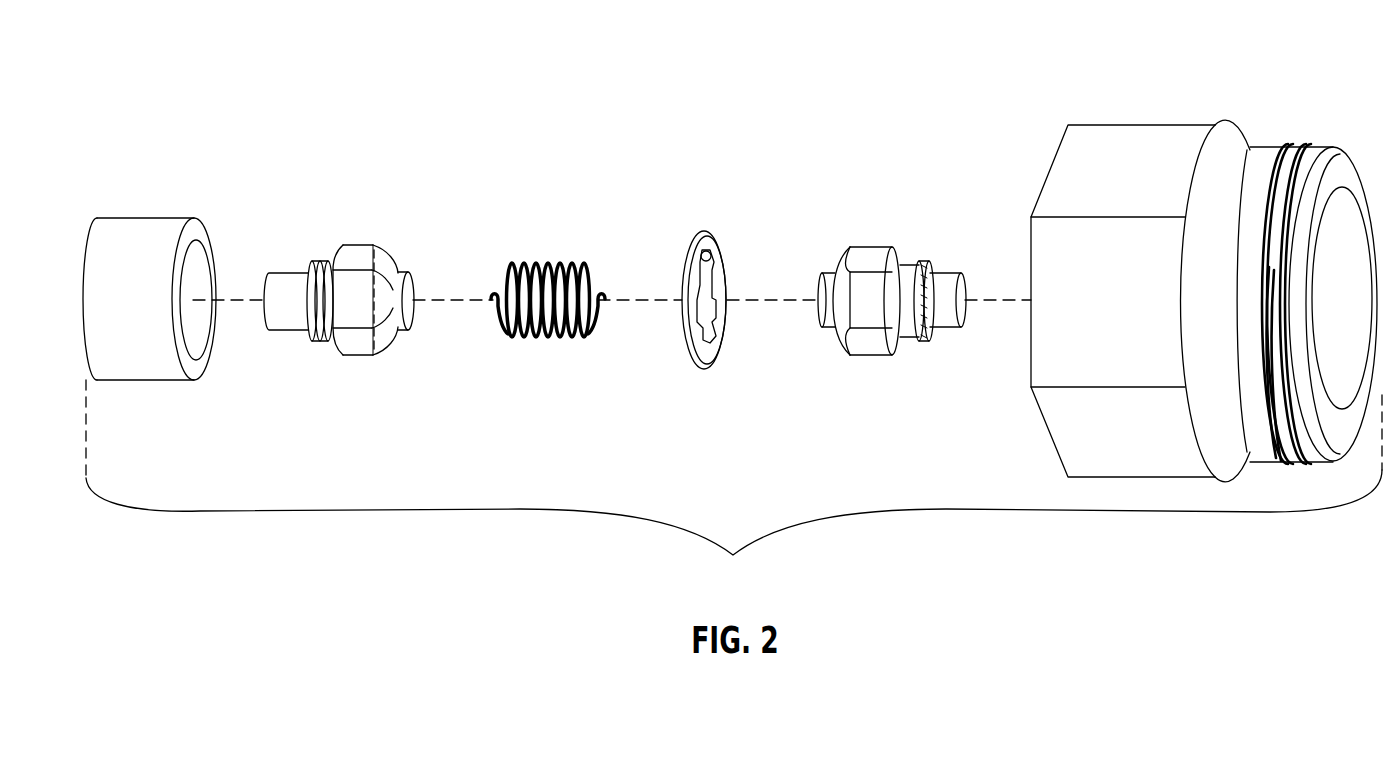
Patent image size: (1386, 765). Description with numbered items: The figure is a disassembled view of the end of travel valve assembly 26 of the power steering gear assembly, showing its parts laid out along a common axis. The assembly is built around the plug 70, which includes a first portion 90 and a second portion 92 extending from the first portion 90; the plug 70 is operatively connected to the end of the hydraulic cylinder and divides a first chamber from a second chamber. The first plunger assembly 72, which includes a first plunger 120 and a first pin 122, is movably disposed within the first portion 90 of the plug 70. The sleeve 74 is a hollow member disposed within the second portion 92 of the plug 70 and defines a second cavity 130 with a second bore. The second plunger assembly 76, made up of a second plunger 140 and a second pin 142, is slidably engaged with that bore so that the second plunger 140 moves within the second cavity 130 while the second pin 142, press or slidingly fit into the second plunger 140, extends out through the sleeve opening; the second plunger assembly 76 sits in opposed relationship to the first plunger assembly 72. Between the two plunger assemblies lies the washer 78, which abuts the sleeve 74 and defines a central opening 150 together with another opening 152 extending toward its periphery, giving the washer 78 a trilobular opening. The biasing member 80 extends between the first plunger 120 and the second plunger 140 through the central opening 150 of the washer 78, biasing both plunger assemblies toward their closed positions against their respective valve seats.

The end of travel valve assembly 26 is at (734, 486).
The plug 70 is at (1185, 259).
The first plunger assembly 72 is at (887, 274).
The sleeve 74 is at (182, 254).
The second plunger assembly 76 is at (338, 282).
The washer 78 is at (739, 272).
The biasing member 80 is at (539, 259).
The first portion 90 is at (1262, 168).
The second portion 92 is at (1082, 152).
The first plunger 120 is at (858, 348).
The first pin 122 is at (947, 330).
The second cavity 130 is at (192, 272).
The second plunger 140 is at (360, 342).
The second pin 142 is at (290, 333).
The central opening 150 is at (717, 335).
The opening 152 is at (713, 257).